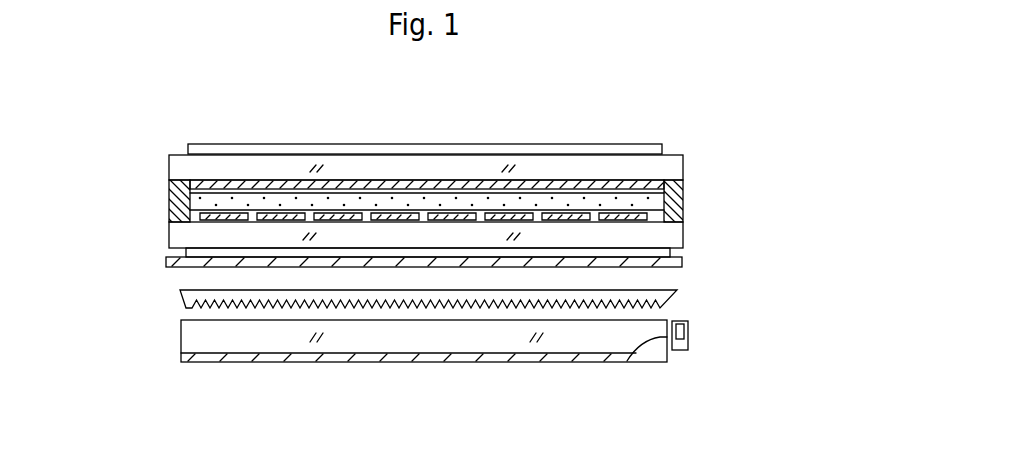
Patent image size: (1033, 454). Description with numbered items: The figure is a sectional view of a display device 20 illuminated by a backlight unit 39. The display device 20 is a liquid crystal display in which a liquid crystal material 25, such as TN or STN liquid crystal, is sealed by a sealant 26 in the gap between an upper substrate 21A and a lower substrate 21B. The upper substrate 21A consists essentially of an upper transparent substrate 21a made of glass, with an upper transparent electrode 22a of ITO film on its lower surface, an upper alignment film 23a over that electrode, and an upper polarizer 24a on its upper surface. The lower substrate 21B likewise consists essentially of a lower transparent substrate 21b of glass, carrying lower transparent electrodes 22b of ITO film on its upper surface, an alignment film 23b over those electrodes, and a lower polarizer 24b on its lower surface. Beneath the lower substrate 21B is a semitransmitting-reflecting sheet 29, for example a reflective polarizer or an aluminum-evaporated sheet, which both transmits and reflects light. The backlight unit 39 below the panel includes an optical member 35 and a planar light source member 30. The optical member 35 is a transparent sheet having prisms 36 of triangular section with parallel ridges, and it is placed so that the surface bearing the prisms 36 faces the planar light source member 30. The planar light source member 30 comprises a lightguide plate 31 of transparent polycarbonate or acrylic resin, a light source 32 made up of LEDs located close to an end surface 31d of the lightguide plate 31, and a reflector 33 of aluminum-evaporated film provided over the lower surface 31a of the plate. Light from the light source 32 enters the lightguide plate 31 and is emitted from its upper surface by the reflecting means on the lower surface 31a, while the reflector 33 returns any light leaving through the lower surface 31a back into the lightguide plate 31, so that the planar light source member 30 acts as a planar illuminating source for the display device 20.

The display device 20 is at (703, 143).
The upper substrate 21A is at (167, 165).
The lower substrate 21B is at (167, 233).
The upper transparent substrate 21a is at (233, 172).
The upper transparent electrode 22a is at (292, 186).
The upper alignment film 23a is at (348, 200).
The upper polarizer 24a is at (407, 150).
The lower transparent substrate 21b is at (485, 235).
The lower transparent electrodes 22b is at (545, 217).
The alignment film 23b is at (588, 216).
The lower polarizer 24b is at (620, 254).
The liquid crystal material 25 is at (670, 197).
The sealant 26 is at (168, 200).
The semitransmitting-reflecting sheet 29 is at (687, 262).
The planar light source member 30 is at (702, 321).
The lightguide plate 31 is at (263, 340).
The lower surface 31a is at (313, 352).
The end surface 31d is at (638, 348).
The light source 32 is at (680, 339).
The reflector 33 is at (383, 361).
The optical member 35 is at (660, 291).
The prisms 36 is at (184, 311).
The backlight unit 39 is at (752, 298).